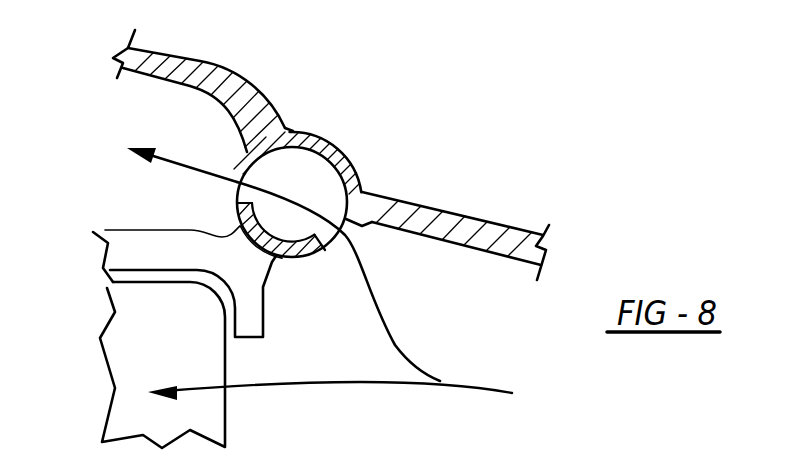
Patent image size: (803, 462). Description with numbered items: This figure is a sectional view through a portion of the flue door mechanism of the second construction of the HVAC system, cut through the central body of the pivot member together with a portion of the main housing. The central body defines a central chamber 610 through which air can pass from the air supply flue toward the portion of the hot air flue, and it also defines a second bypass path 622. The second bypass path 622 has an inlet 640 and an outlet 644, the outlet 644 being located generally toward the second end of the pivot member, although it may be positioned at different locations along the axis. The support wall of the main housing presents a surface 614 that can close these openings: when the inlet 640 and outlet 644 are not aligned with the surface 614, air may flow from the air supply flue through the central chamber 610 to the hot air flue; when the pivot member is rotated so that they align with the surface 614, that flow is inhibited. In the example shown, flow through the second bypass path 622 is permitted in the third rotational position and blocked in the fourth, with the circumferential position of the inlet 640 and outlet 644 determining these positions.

The central chamber 610 is at (313, 177).
The second bypass path 622 is at (301, 168).
The outlet 644 is at (237, 175).
The inlet 640 is at (347, 222).
The surface 614 is at (250, 234).